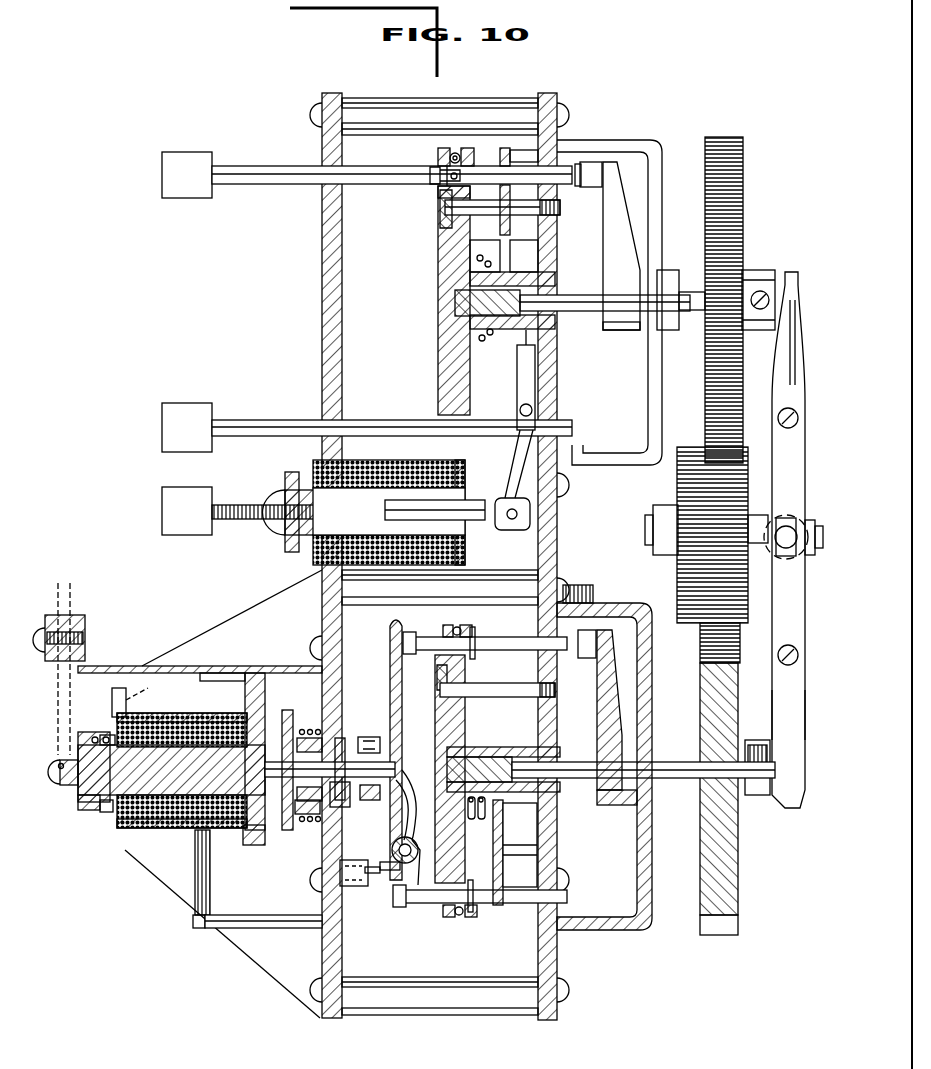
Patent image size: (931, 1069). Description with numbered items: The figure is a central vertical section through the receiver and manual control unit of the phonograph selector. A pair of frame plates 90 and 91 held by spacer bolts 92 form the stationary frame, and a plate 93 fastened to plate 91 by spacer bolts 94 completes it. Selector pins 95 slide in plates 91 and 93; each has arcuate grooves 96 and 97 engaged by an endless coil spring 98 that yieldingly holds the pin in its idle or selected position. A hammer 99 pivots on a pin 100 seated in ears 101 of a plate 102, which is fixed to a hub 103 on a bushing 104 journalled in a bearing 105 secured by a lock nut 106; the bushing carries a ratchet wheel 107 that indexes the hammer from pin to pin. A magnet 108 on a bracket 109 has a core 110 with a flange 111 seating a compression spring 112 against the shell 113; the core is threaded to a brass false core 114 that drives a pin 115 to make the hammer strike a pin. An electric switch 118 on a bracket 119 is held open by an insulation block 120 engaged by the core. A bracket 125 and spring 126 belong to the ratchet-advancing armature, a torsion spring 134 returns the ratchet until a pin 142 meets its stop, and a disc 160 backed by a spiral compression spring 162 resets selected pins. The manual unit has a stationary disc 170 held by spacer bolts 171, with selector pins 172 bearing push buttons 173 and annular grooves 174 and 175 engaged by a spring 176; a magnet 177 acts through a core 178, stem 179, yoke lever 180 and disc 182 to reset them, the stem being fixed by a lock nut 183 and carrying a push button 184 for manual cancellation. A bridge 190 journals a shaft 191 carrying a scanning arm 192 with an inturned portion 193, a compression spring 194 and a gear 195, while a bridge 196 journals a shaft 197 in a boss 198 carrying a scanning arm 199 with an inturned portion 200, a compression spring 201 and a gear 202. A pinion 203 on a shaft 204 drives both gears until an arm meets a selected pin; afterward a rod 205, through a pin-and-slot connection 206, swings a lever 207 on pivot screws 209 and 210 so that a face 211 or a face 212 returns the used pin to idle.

The frame plate 90 is at (330, 92).
The frame plate 91 is at (560, 100).
The spacer bolts 92 is at (385, 105).
The plate 93 is at (418, 886).
The spacer bolts 94 is at (556, 698).
The selector pins 95 is at (488, 640).
The arcuate groove 96 is at (440, 668).
The arcuate groove 97 is at (432, 640).
The endless coil spring 98 is at (452, 918).
The hammer 99 is at (390, 650).
The pin 100 is at (402, 866).
The ears 101 is at (392, 872).
The plate 102 is at (385, 892).
The hub 103 is at (365, 800).
The bushing 104 is at (406, 785).
The bearing 105 is at (306, 735).
The lock nut 106 is at (336, 740).
The ratchet wheel 107 is at (290, 720).
The magnet 108 is at (150, 722).
The bracket 109 is at (252, 668).
The core 110 is at (85, 800).
The flange 111 is at (92, 815).
The compression spring 112 is at (102, 820).
The shell 113 is at (110, 740).
The false core 114 is at (272, 832).
The pin 115 is at (412, 808).
The electric switch 118 is at (72, 690).
The bracket 119 is at (138, 668).
The insulation block 120 is at (62, 782).
The bracket 125 is at (120, 690).
The spring 126 is at (212, 872).
The torsion spring 134 is at (303, 817).
The pin 142 is at (375, 866).
The disc 160 is at (498, 915).
The spiral compression spring 162 is at (500, 826).
The stationary disc 170 is at (438, 270).
The spacer bolts 171 is at (440, 220).
The selector pins 172 is at (258, 172).
The push buttons 173 is at (182, 155).
The annular groove 174 is at (438, 198).
The annular groove 175 is at (436, 170).
The spring 176 is at (457, 148).
The magnet 177 is at (402, 470).
The core 178 is at (292, 556).
The stem 179 is at (488, 522).
The yoke lever 180 is at (540, 386).
The disc 182 is at (513, 148).
The lock nut 183 is at (272, 530).
The push button 184 is at (185, 500).
The bridge 190 is at (653, 700).
The shaft 191 is at (672, 780).
The scanning arm 192 is at (605, 802).
The inturned portion 193 is at (582, 618).
The compression spring 194 is at (438, 740).
The gear 195 is at (738, 848).
The bridge 196 is at (655, 143).
The shaft 197 is at (597, 330).
The boss 198 is at (540, 280).
The scanning arm 199 is at (615, 228).
The inturned portion 200 is at (590, 165).
The compression spring 201 is at (455, 300).
The gear 202 is at (743, 178).
The pinion 203 is at (680, 486).
The shaft 204 is at (650, 528).
The rod 205 is at (806, 548).
The pin-and-slot connection 206 is at (780, 522).
The lever 207 is at (780, 446).
The pivot screw 209 is at (792, 415).
The pivot screw 210 is at (778, 662).
The face 211 is at (595, 187).
The face 212 is at (585, 660).